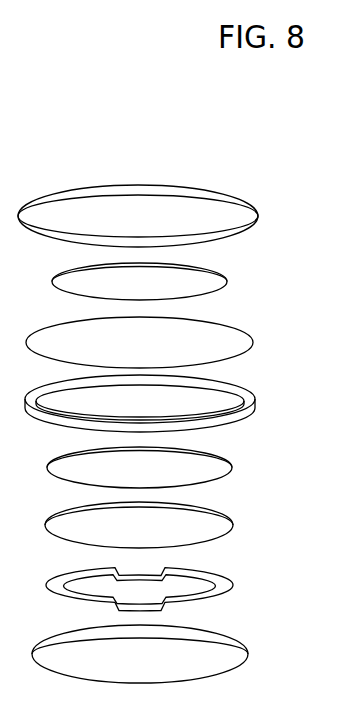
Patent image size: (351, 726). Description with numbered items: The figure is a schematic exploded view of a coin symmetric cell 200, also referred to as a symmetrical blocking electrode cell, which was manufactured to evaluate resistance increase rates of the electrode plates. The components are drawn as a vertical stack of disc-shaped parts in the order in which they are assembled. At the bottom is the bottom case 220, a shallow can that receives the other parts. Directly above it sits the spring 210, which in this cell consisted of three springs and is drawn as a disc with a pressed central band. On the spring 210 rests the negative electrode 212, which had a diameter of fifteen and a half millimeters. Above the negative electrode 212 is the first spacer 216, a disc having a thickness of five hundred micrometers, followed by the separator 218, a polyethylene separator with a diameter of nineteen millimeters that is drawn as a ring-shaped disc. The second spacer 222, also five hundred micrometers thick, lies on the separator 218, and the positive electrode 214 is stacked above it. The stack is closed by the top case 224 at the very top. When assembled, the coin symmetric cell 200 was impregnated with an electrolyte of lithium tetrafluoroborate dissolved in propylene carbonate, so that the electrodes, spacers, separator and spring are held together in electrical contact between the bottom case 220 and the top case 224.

The coin symmetric cell 200 is at (138, 170).
The top case 224 is at (258, 217).
The positive electrode 214 is at (227, 283).
The second spacer 222 is at (253, 343).
The separator 218 is at (255, 400).
The first spacer 216 is at (232, 466).
The negative electrode 212 is at (233, 523).
The spring 210 is at (233, 587).
The bottom case 220 is at (247, 660).